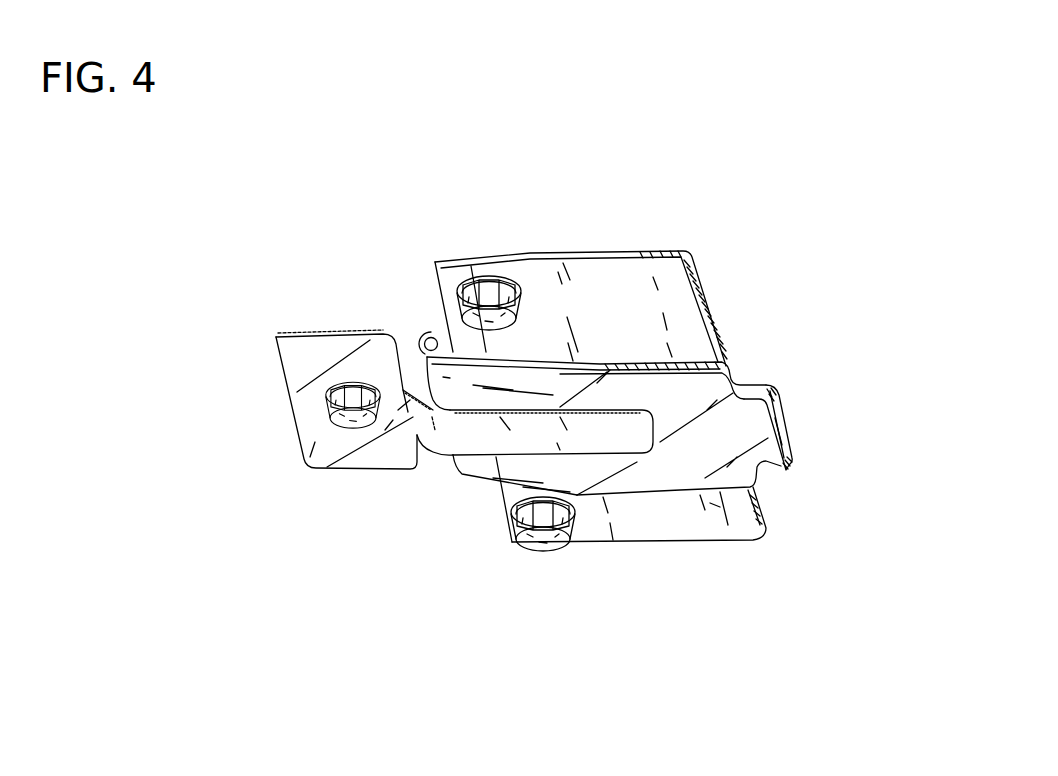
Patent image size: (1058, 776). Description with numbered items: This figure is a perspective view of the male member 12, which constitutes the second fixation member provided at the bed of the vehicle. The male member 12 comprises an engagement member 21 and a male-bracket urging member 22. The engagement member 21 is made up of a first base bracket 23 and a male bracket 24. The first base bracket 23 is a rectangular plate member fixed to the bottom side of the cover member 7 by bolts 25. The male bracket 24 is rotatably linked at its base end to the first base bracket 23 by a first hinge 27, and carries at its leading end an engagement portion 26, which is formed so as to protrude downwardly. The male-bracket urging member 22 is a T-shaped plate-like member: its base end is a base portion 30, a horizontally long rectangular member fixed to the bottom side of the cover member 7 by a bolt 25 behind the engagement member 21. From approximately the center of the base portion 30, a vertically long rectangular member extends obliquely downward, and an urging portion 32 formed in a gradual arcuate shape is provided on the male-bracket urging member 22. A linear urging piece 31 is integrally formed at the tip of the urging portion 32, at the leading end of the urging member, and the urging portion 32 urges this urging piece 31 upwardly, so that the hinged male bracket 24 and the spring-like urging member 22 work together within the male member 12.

The cover member 7 is at (730, 183).
The male member 12 is at (835, 561).
The engagement member 21 is at (718, 285).
The male-bracket urging member 22 is at (312, 367).
The first base bracket 23 is at (587, 292).
The male bracket 24 is at (724, 442).
The bolts 25 is at (447, 265).
The engagement portion 26 is at (787, 423).
The first hinge 27 is at (426, 338).
The base portion 30 is at (317, 443).
The urging piece 31 is at (613, 430).
The urging portion 32 is at (458, 437).